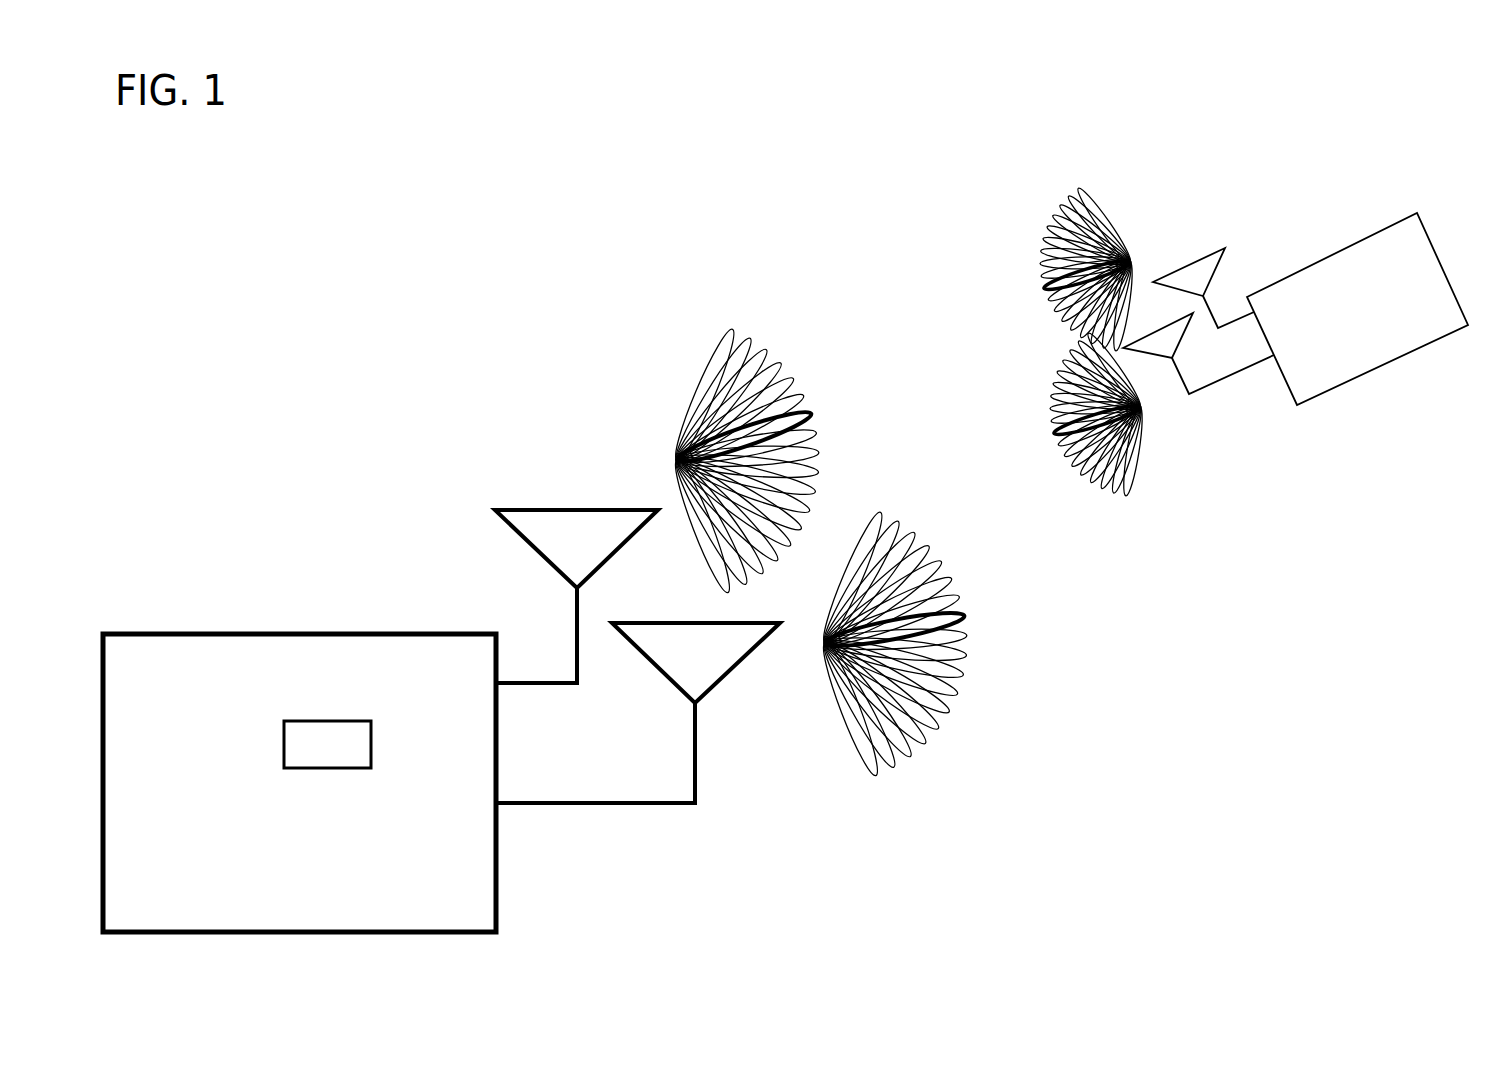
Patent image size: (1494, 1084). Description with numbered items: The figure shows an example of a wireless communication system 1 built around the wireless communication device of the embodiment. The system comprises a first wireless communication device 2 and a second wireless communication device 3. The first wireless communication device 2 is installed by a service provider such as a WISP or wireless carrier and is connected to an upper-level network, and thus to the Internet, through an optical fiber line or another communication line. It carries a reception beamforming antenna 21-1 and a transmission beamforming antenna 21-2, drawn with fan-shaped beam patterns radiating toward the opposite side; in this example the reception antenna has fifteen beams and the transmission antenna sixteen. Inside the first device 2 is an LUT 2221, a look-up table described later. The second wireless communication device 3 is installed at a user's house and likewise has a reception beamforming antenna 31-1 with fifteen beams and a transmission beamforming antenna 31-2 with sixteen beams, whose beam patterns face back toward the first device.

The wireless communication system 1 is at (1366, 156).
The first wireless communication device 2 is at (286, 633).
The LUT 2221 is at (327, 720).
The reception beamforming antenna 21-1 is at (529, 508).
The transmission beamforming antenna 21-2 is at (639, 622).
The second wireless communication device 3 is at (1316, 262).
The reception beamforming antenna 31-1 is at (1187, 260).
The transmission beamforming antenna 31-2 is at (1183, 337).